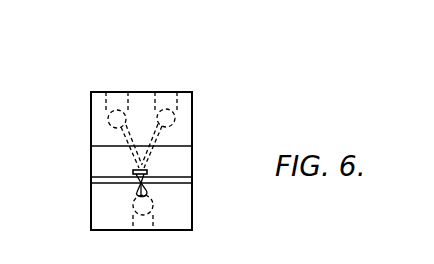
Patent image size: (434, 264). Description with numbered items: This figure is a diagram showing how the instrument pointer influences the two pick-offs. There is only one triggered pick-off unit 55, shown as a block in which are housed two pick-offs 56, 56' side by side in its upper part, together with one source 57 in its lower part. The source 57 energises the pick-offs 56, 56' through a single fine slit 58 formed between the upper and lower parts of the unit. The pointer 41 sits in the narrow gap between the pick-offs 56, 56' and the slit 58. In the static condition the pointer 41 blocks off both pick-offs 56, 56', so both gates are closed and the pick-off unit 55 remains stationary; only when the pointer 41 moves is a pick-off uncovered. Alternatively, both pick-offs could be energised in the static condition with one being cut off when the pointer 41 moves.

The triggered pick-off unit 55 is at (184, 212).
The pick-off 56 is at (192, 130).
The pick-off 56' is at (124, 106).
The pointer 41 is at (147, 171).
The fine slit 58 is at (146, 180).
The source 57 is at (135, 207).